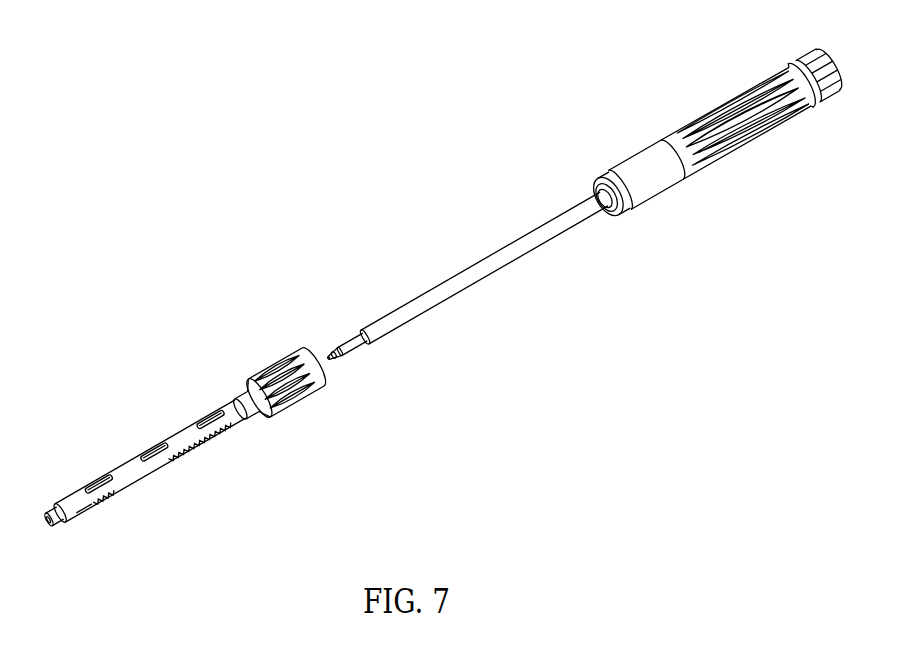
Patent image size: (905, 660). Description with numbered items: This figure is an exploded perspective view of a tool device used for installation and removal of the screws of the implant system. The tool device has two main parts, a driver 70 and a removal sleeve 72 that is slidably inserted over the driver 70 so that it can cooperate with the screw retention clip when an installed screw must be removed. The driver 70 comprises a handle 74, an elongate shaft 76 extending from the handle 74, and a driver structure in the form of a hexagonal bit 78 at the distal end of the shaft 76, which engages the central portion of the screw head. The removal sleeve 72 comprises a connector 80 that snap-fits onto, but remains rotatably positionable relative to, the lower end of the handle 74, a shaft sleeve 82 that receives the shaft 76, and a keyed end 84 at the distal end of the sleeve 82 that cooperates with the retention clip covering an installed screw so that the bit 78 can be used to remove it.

The driver 70 is at (527, 208).
The removal sleeve 72 is at (153, 400).
The handle 74 is at (672, 134).
The elongate shaft 76 is at (495, 273).
The hexagonal bit 78 is at (332, 352).
The connector 80 is at (267, 376).
The shaft sleeve 82 is at (145, 480).
The keyed end 84 is at (72, 522).